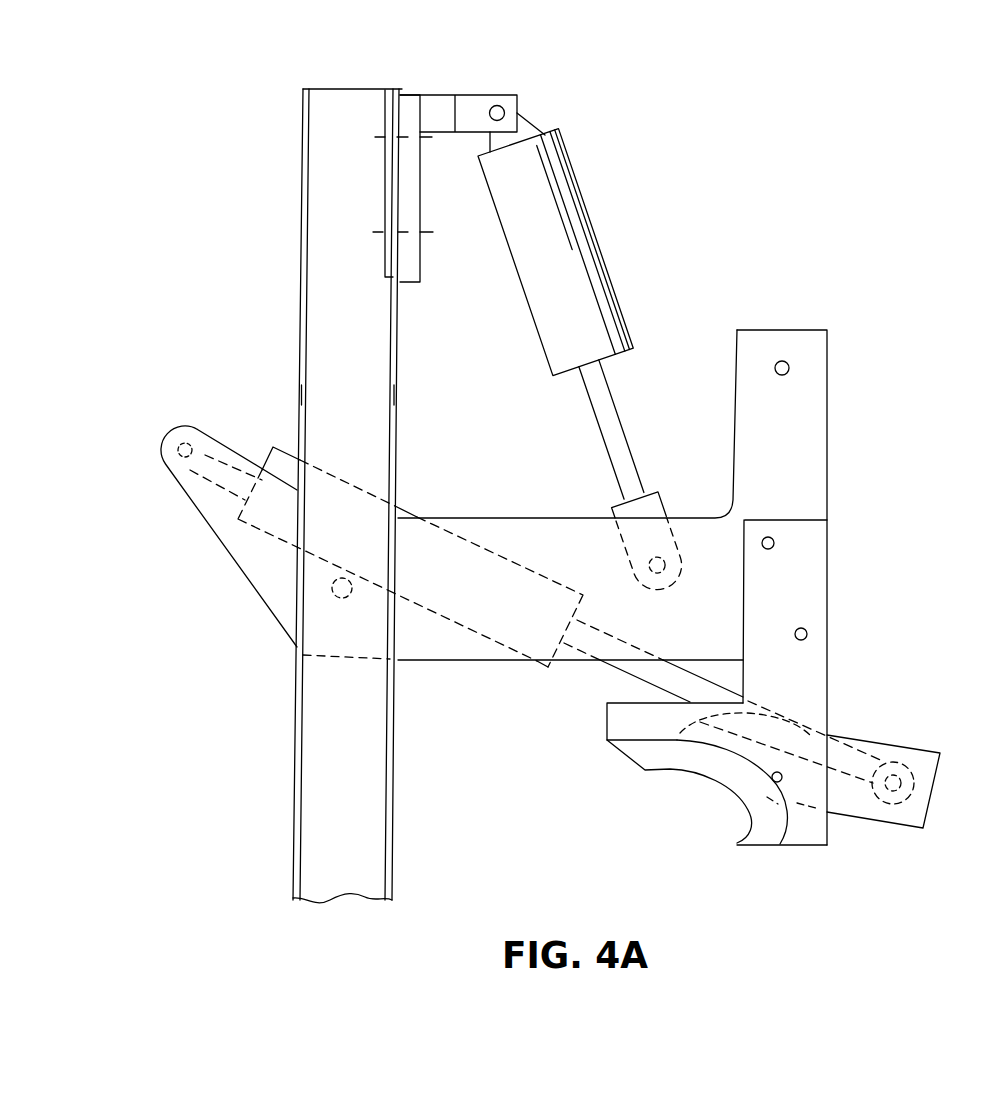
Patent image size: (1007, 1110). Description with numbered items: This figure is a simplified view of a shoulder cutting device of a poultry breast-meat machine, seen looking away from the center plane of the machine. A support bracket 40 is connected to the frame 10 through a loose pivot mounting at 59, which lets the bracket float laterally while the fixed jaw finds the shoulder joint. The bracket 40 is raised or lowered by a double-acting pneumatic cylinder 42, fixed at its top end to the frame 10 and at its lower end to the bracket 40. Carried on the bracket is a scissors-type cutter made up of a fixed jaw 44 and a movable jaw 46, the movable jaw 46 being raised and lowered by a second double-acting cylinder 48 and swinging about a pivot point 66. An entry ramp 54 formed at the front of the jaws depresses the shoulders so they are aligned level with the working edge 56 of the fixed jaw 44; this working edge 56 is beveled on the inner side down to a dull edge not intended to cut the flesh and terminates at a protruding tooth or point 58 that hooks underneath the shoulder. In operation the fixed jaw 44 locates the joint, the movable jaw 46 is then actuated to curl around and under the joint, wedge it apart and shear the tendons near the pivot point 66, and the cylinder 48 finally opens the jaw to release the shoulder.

The frame 10 is at (315, 325).
The double-acting pneumatic cylinder 42 is at (585, 267).
The support bracket 40 is at (803, 353).
The fixed jaw 44 is at (812, 682).
The second double-acting cylinder 48 is at (478, 550).
The loose pivot mounting 59 is at (338, 597).
The entry ramp 54 is at (612, 746).
The working edge 56 is at (672, 770).
The protruding tooth or point 58 is at (735, 845).
The pivot point 66 is at (783, 776).
The movable jaw 46 is at (930, 808).